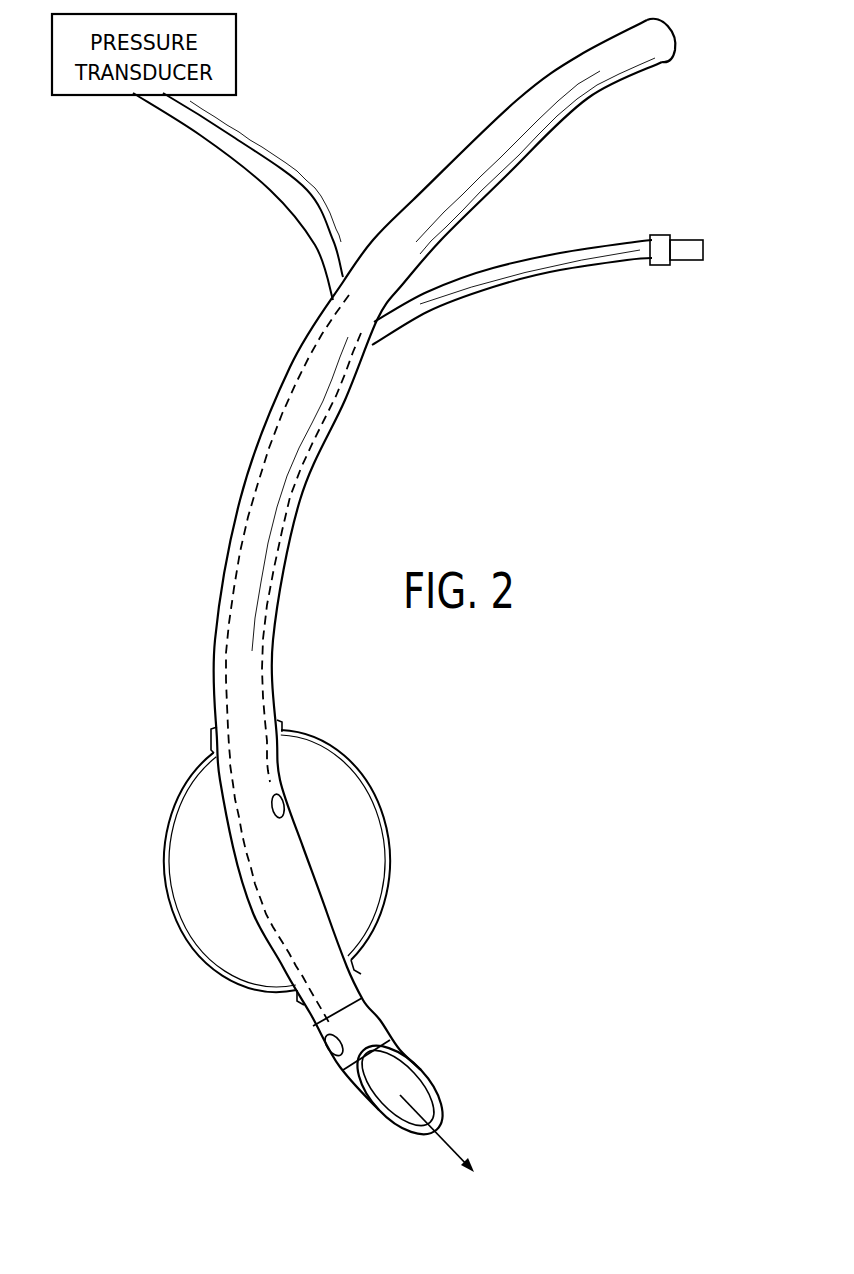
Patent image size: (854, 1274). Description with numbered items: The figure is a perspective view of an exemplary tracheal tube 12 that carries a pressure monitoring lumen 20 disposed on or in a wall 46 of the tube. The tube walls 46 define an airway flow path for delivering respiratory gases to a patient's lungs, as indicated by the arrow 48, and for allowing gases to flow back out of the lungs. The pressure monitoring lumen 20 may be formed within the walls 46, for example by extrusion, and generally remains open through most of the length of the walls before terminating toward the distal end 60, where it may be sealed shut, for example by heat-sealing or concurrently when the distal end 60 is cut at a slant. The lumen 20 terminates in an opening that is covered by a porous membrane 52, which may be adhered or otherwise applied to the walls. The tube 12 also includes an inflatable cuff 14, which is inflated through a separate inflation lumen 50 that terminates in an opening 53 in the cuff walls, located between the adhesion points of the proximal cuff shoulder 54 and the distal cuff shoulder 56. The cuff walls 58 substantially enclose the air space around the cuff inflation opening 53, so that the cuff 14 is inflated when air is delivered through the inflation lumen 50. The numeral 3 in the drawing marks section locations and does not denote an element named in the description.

The tracheal tube 12 is at (243, 288).
The inflatable cuff 14 is at (183, 744).
The pressure monitoring lumen 20 is at (290, 392).
The wall 46 is at (218, 596).
The arrow 48 is at (445, 1145).
The inflation lumen 50 is at (556, 271).
The porous membrane 52 is at (378, 1022).
The opening 53 is at (287, 813).
The proximal cuff shoulder 54 is at (283, 730).
The distal cuff shoulder 56 is at (354, 963).
The cuff walls 58 is at (372, 783).
The distal end 60 is at (398, 1126).
The pressure sensing port 3 is at (318, 1033).